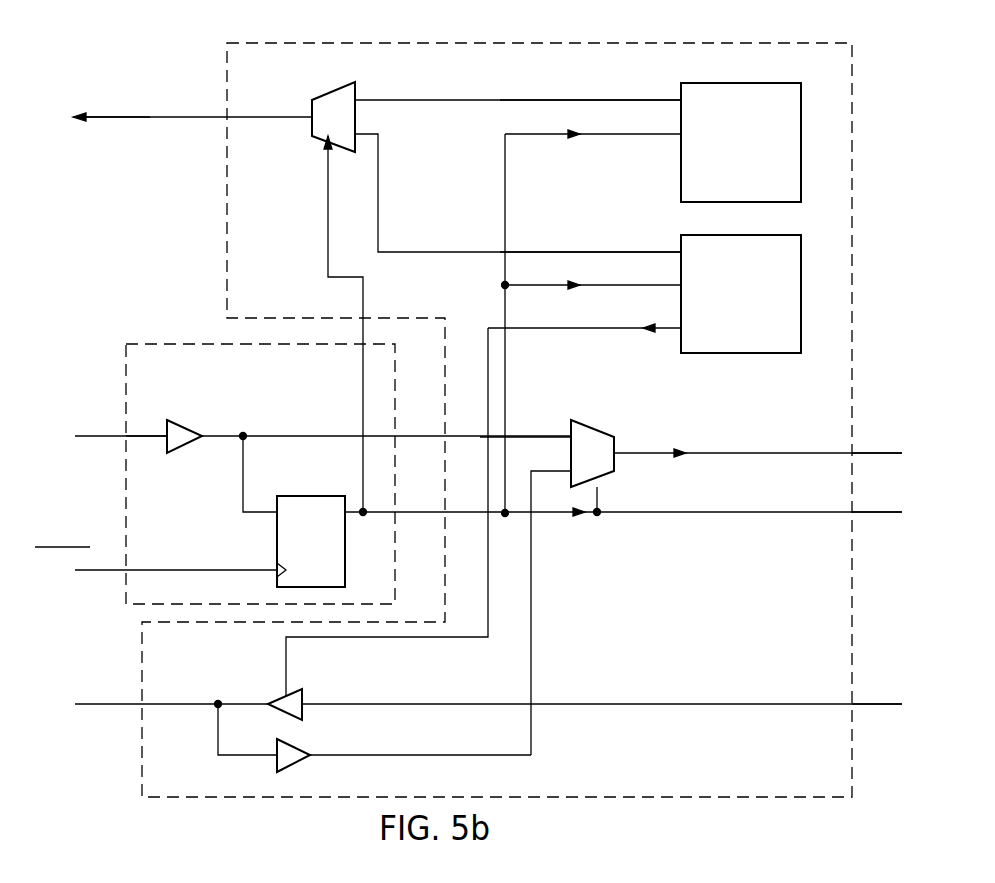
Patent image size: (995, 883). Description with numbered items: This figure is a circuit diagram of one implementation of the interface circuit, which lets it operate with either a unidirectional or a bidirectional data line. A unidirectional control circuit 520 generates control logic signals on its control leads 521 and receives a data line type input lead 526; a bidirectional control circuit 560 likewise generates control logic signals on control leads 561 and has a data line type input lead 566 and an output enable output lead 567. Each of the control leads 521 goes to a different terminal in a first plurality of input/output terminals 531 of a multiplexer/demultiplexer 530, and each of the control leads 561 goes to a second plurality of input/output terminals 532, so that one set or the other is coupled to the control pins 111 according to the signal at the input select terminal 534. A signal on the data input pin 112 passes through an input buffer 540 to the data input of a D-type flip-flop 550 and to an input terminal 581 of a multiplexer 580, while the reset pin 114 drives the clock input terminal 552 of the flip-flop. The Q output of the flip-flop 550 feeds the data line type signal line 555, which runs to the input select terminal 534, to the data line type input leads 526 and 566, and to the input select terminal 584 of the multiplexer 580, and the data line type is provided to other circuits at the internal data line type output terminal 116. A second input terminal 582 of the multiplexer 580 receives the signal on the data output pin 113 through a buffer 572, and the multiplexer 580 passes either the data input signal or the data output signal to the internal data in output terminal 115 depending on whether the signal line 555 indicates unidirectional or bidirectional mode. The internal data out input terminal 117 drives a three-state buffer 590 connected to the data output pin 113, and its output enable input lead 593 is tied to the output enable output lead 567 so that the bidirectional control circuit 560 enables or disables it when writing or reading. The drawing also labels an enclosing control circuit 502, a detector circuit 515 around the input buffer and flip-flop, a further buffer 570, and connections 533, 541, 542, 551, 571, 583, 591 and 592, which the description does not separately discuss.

The control pins 111 is at (108, 120).
The data input pin 112 is at (98, 438).
The data output pin 113 is at (93, 707).
The reset pin 114 is at (98, 575).
The internal data in output terminal 115 is at (878, 453).
The internal data line type output terminal 116 is at (878, 512).
The internal data out input terminal 117 is at (878, 706).
The control circuit 502 is at (823, 791).
The detector circuit 515 is at (355, 372).
The unidirectional control circuit 520 is at (773, 82).
The control leads 521 is at (615, 97).
The data line type input lead 526 is at (610, 137).
The multiplexer/demultiplexer 530 is at (332, 90).
The first plurality of input/output terminals 531 is at (383, 98).
The second plurality of input/output terminals 532 is at (381, 147).
The multiplexer output line 533 is at (285, 113).
The input select terminal 534 is at (327, 173).
The input buffer 540 is at (183, 419).
The buffer input line 541 is at (142, 436).
The buffer output line 542 is at (225, 436).
The D-type flip-flop 550 is at (321, 495).
The flip-flop data input line 551 is at (243, 496).
The clock input terminal 552 is at (257, 568).
The data line type signal line 555 is at (648, 515).
The bidirectional control circuit 560 is at (775, 353).
The control leads 561 is at (635, 250).
The data line type input lead 566 is at (643, 287).
The output enable output lead 567 is at (623, 327).
The output buffer 570 is at (293, 763).
The buffer input line 571 is at (243, 753).
The buffer 572 is at (390, 753).
The multiplexer 580 is at (598, 425).
The input terminal 581 is at (550, 432).
The second input terminal 582 is at (552, 468).
The multiplexer output line 583 is at (643, 452).
The input select terminal 584 is at (600, 497).
The three-state buffer 590 is at (303, 697).
The buffer output line 591 is at (240, 702).
The buffer input line 592 is at (390, 703).
The output enable input lead 593 is at (287, 667).